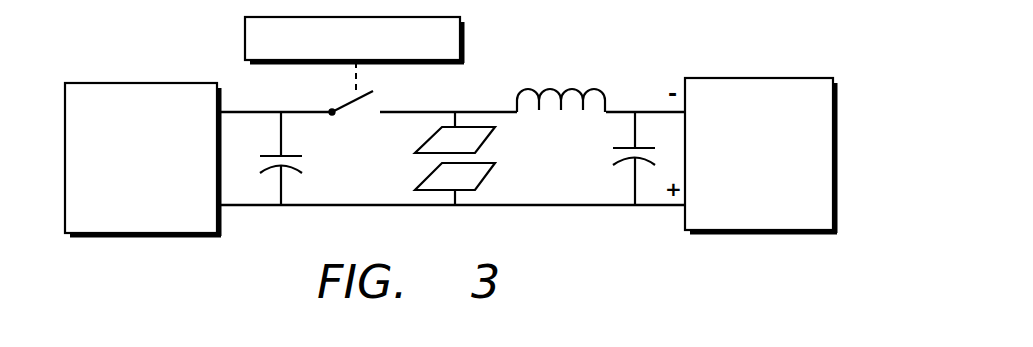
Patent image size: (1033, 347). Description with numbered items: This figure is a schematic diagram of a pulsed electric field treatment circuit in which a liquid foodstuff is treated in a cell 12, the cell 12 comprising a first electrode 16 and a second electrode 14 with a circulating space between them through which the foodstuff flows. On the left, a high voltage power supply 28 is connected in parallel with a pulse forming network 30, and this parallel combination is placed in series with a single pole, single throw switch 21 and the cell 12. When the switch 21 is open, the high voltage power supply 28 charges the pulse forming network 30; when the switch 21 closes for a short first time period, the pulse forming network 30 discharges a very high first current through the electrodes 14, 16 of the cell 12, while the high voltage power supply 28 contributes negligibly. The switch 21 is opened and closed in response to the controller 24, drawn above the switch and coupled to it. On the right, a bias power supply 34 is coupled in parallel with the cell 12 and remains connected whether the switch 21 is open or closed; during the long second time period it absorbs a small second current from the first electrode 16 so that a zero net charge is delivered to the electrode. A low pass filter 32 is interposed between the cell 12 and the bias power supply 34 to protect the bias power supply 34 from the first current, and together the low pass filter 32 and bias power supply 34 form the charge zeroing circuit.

The treatment zone 12 is at (497, 158).
The second electrode 14 is at (473, 179).
The first electrode 16 is at (488, 132).
The single pole, single throw switch 21 is at (347, 109).
The controller 24 is at (462, 40).
The high voltage power supply 28 is at (127, 237).
The pulse forming network 30 is at (307, 168).
The low pass filter 32 is at (652, 218).
The bias power supply 34 is at (747, 78).